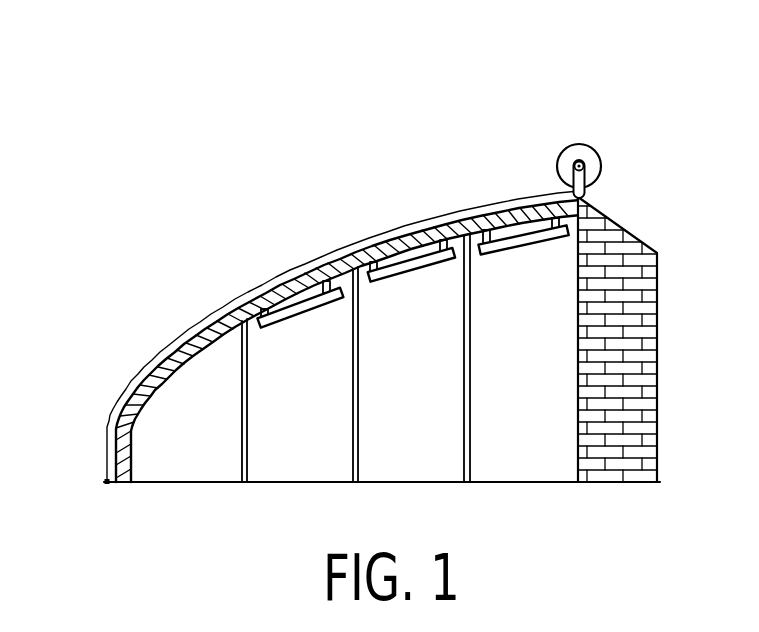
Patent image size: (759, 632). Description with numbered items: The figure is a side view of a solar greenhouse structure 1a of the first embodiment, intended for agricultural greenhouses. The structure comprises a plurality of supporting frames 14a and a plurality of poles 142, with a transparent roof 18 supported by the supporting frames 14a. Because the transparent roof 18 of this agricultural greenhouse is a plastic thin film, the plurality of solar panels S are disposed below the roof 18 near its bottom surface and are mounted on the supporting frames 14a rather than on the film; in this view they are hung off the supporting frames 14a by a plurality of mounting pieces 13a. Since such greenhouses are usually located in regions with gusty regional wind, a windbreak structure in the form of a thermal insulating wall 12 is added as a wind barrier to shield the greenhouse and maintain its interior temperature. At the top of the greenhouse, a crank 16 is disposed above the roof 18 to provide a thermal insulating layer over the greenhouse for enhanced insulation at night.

The solar greenhouse structure 1a is at (126, 84).
The thermal insulating wall 12 is at (650, 382).
The mounting pieces 13a is at (272, 305).
The supporting frames 14a is at (321, 258).
The poles 142 is at (468, 427).
The crank 16 is at (598, 148).
The transparent roof 18 is at (120, 397).
The solar panels S is at (520, 238).